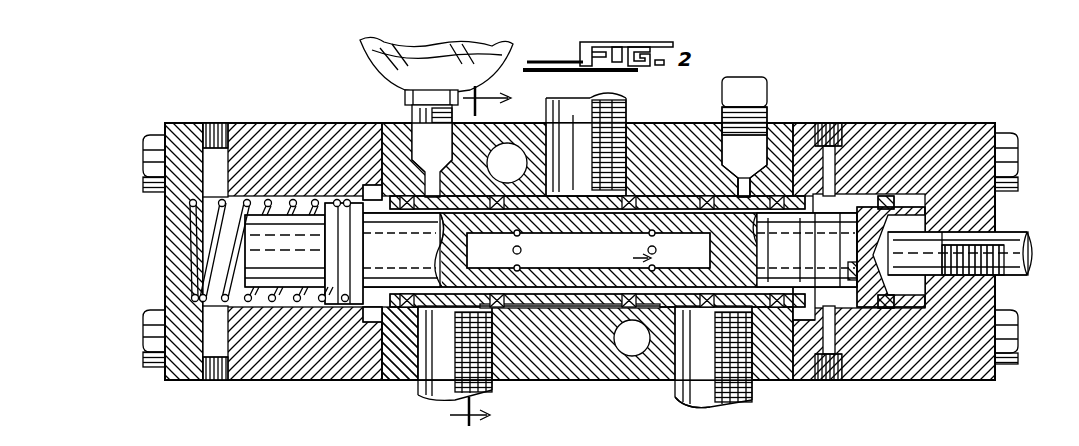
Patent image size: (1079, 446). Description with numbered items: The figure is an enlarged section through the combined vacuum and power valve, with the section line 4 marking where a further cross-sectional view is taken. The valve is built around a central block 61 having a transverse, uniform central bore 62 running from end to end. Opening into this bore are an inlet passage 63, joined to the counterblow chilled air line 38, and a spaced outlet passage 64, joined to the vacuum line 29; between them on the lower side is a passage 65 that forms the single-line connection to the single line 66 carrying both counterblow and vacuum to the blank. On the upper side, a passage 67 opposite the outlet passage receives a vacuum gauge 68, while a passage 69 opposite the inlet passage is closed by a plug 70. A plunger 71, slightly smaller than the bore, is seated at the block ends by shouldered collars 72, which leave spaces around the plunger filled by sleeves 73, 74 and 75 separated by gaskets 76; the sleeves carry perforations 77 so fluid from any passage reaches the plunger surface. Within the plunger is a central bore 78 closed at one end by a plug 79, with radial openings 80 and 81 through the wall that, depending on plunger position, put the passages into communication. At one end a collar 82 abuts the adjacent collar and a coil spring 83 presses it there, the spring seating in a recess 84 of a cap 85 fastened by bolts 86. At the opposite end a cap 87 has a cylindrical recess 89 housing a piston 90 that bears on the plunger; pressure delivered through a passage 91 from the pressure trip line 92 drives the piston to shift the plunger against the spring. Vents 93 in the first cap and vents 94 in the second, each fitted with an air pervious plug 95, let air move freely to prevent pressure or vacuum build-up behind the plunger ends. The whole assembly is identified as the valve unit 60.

The section line 4- 4 is at (479, 257).
The vacuum line 29 is at (438, 400).
The counterblow cooling or chilled air line 38 is at (742, 401).
The valve body 60 is at (791, 115).
The central block 61 is at (553, 365).
The central bore 62 is at (592, 310).
The inlet passage 63 is at (752, 375).
The outlet passage 64 is at (416, 366).
The passage 65 is at (622, 122).
The single line 66 is at (620, 96).
The passage 67 is at (397, 172).
The vacuum gauge 68 is at (374, 53).
The passage 69 is at (751, 184).
The plug 70 is at (762, 96).
The plunger 71 is at (838, 268).
The shouldered collars 72 is at (808, 205).
The sleeve 73 is at (402, 312).
The sleeve 74 is at (535, 308).
The sleeve 75 is at (647, 334).
The gaskets 76 is at (505, 202).
The perforations 77 is at (458, 204).
The central bore 78 is at (630, 252).
The plug 79 is at (418, 252).
The radial opening 80 is at (522, 251).
The radial opening 81 is at (658, 251).
The collar 82 is at (360, 303).
The coil spring 83 is at (277, 303).
The recess 84 is at (257, 194).
The cap 85 is at (172, 240).
The fastening bolts 86 is at (155, 145).
The cap 87 is at (954, 363).
The cylindrical recess 89 is at (892, 194).
The piston 90 is at (926, 201).
The passage 91 is at (990, 277).
The pressure trip line 92 is at (1003, 236).
The vents 93 is at (213, 170).
The vents 94 is at (837, 183).
The air pervious plug 95 is at (217, 128).